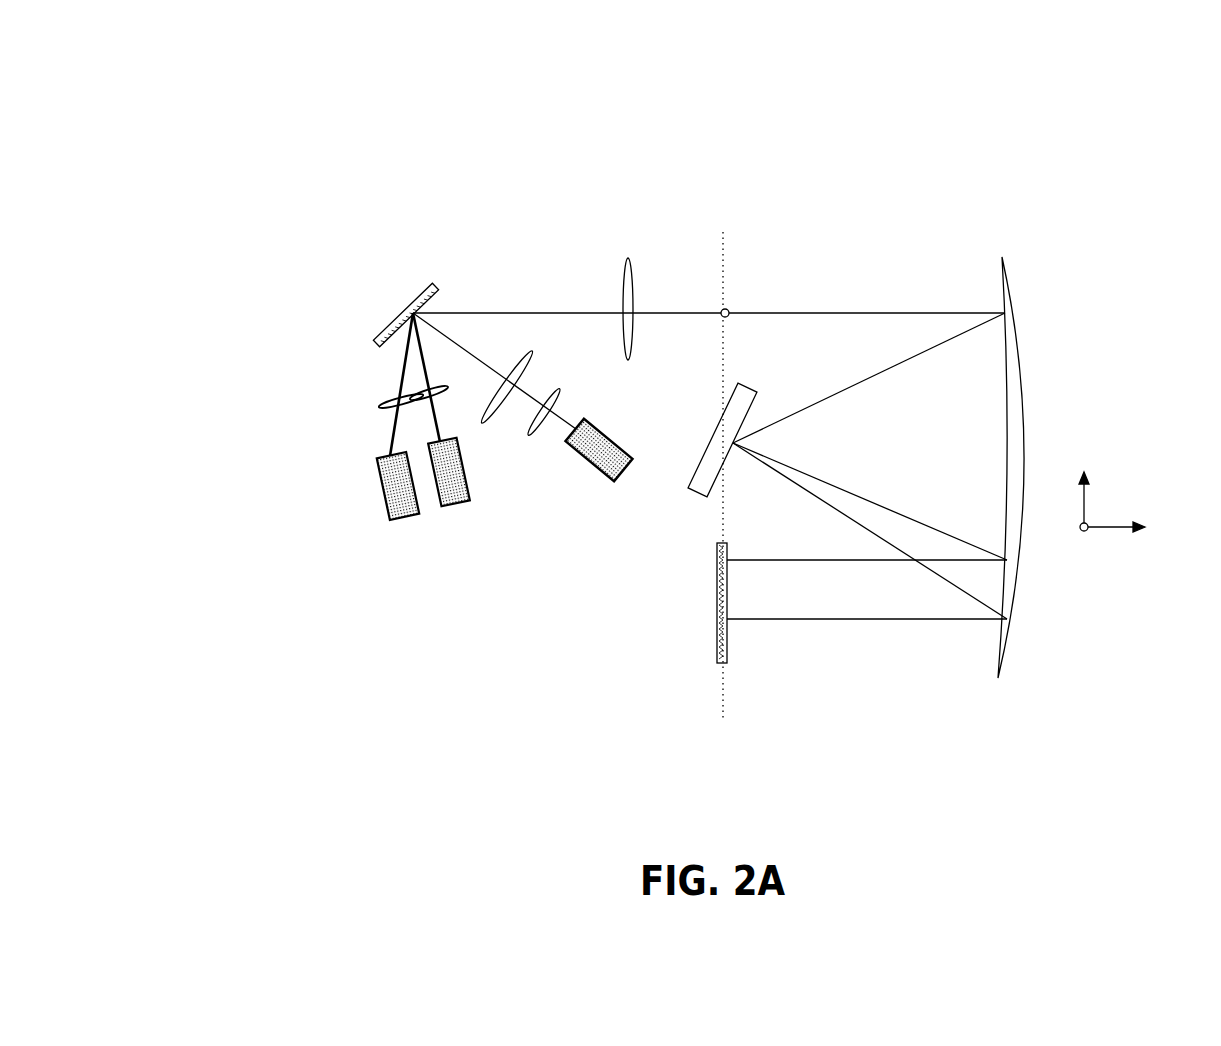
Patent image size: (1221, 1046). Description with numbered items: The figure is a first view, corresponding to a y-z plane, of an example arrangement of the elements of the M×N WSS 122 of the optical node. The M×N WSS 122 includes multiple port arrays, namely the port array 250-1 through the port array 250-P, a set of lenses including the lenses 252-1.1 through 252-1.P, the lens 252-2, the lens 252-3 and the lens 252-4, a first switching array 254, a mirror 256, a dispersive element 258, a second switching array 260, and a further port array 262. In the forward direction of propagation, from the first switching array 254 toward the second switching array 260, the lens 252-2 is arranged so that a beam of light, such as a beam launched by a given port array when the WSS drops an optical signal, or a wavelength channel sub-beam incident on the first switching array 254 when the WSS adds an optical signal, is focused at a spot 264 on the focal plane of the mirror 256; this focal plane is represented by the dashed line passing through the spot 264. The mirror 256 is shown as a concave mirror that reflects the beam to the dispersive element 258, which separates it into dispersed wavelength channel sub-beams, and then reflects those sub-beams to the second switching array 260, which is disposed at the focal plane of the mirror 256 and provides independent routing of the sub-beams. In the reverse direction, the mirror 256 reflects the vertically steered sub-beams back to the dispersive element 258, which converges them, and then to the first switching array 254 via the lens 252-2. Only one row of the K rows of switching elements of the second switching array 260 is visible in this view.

The M×N WSS 122 is at (238, 69).
The port array 250-1 is at (449, 509).
The port array 250-P is at (403, 521).
The lens 252-1.1 is at (418, 398).
The lens 252-1.P is at (380, 406).
The lens 252-2 is at (628, 255).
The lens 252-3 is at (497, 427).
The lens 252-4 is at (545, 427).
The first switching array 254 is at (442, 280).
The mirror 256 is at (1022, 368).
The dispersive element 258 is at (688, 493).
The second switching array 260 is at (717, 588).
The port array 262 is at (601, 431).
The spot 264 is at (727, 309).